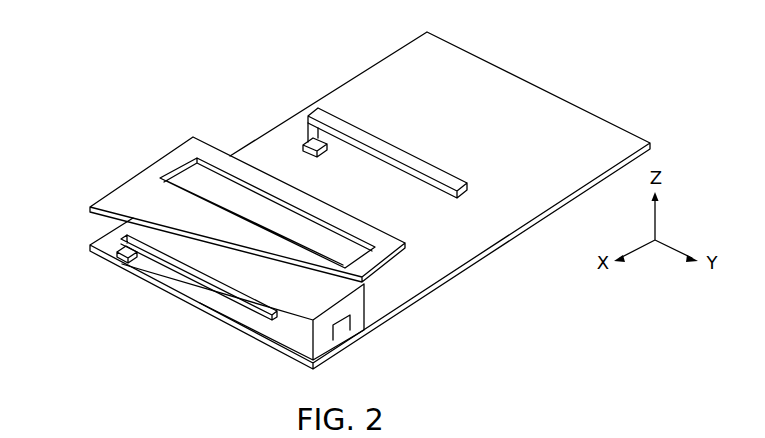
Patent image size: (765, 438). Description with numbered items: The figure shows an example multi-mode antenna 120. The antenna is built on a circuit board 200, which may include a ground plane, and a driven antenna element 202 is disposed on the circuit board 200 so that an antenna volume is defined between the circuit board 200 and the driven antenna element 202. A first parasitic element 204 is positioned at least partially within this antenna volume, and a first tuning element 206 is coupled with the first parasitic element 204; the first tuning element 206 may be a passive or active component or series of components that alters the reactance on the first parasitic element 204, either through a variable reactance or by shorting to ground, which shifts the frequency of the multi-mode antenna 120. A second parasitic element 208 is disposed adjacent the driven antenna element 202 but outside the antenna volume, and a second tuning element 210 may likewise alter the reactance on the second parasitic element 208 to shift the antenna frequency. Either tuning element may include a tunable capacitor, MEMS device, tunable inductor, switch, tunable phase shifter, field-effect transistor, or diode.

The multi-mode antenna 120 is at (113, 63).
The circuit board 200 is at (349, 75).
The driven antenna element 202 is at (137, 173).
The first parasitic element 204 is at (228, 298).
The first tuning element 206 is at (114, 261).
The second parasitic element 208 is at (417, 157).
The second tuning element 210 is at (316, 156).